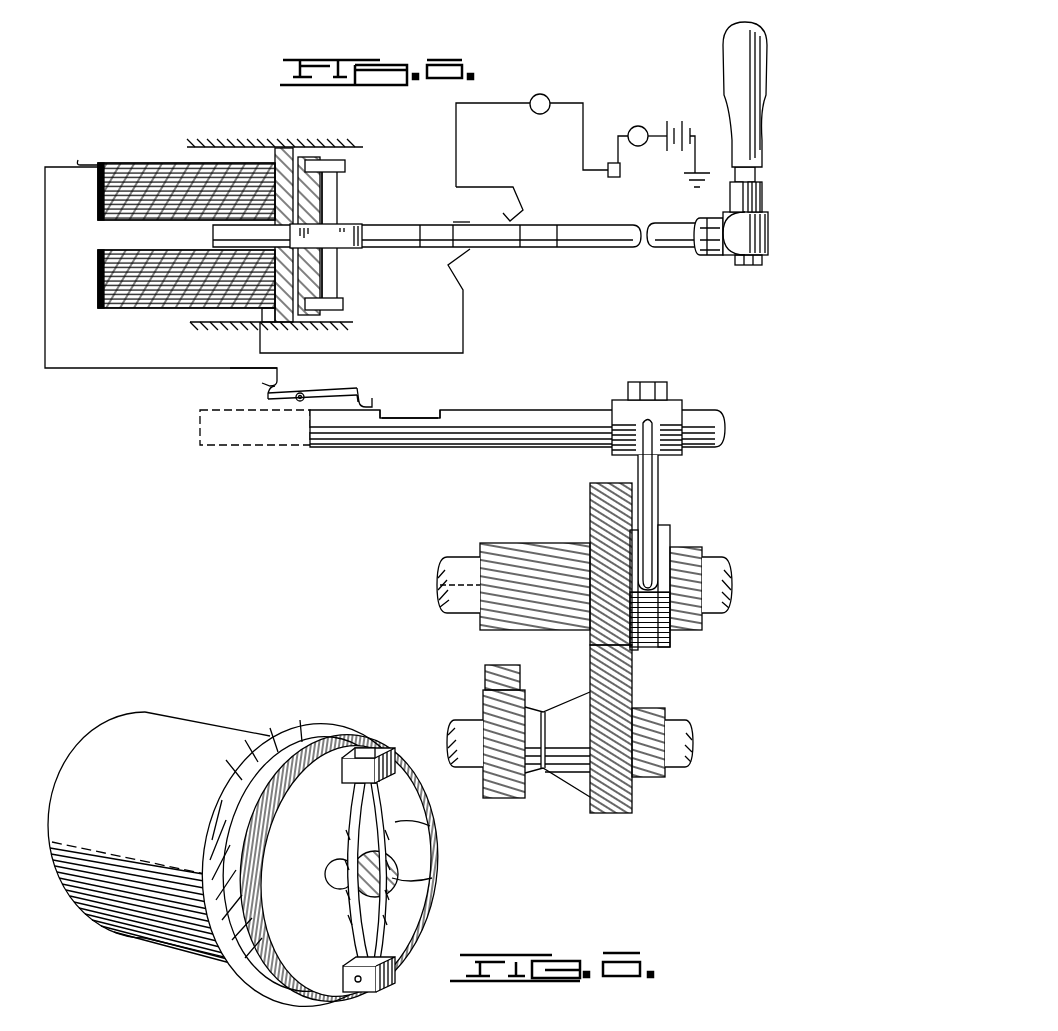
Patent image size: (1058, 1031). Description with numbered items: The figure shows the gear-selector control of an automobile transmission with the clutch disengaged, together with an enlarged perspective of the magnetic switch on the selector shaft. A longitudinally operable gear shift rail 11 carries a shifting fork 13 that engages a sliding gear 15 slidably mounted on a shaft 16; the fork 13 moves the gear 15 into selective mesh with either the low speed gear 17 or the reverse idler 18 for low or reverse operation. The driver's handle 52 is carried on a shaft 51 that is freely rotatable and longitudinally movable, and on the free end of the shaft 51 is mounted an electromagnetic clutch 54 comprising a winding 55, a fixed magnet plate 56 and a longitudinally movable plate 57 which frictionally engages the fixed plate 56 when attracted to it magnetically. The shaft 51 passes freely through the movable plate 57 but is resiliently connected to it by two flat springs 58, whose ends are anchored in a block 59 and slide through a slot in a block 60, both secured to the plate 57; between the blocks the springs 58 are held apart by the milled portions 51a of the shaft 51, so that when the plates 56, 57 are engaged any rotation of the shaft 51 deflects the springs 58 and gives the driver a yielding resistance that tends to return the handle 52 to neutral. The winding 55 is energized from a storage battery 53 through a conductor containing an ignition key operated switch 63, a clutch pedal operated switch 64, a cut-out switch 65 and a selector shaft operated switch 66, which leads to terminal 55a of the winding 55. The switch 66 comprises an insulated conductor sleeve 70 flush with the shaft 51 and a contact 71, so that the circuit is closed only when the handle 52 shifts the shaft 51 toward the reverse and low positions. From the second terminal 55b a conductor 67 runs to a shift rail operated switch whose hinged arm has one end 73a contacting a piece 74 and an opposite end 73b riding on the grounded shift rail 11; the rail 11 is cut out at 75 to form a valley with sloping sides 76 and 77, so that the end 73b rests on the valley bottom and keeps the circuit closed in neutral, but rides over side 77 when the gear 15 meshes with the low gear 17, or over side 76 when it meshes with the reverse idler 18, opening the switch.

In FIG. 5, the gear shift rail 11 is at (560, 410).
In FIG. 5, the shifting fork 13 is at (660, 495).
In FIG. 5, the sliding gear 15 is at (590, 505).
In FIG. 5, the shaft 16 is at (458, 560).
In FIG. 5, the low speed gear 17 is at (632, 803).
In FIG. 5, the reverse idler 18 is at (487, 675).
In FIG. 5, the shaft 51 is at (648, 225).
In FIG. 6, the shaft 51 is at (385, 870).
In FIG. 5, the milled portions 51a is at (355, 248).
In FIG. 6, the milled portions 51a is at (385, 890).
In FIG. 5, the handle 52 is at (730, 60).
In FIG. 5, the storage battery 53 is at (688, 125).
In FIG. 5, the electromagnetic clutch 54 is at (282, 150).
In FIG. 6, the electromagnetic clutch 54 is at (190, 720).
In FIG. 5, the winding 55 is at (160, 170).
In FIG. 5, the terminal 55a is at (262, 318).
In FIG. 5, the second terminal 55b is at (82, 164).
In FIG. 5, the fixed magnet plate 56 is at (308, 157).
In FIG. 6, the fixed magnet plate 56 is at (305, 735).
In FIG. 5, the longitudinally movable plate 57 is at (332, 162).
In FIG. 6, the longitudinally movable plate 57 is at (275, 775).
In FIG. 5, the flat springs 58 is at (338, 205).
In FIG. 6, the flat springs 58 is at (385, 830).
In FIG. 5, the block 59 is at (343, 305).
In FIG. 6, the block 59 is at (378, 992).
In FIG. 5, the block 60 is at (345, 166).
In FIG. 6, the block 60 is at (380, 756).
In FIG. 5, the ignition key operated switch 63 is at (645, 128).
In FIG. 5, the clutch pedal operated switch 64 is at (612, 178).
In FIG. 5, the cut-out switch 65 is at (550, 104).
In FIG. 5, the selector shaft operated switch 66 is at (485, 256).
In FIG. 5, the conductor 67 is at (47, 280).
In FIG. 5, the insulated conductor sleeve 70 is at (464, 222).
In FIG. 5, the contact 71 is at (518, 200).
In FIG. 5, the end of hinged arm 73a is at (300, 393).
In FIG. 5, the end of hinged arm 73b is at (366, 402).
In FIG. 5, the piece 74 is at (232, 375).
In FIG. 5, the cut-out 75 is at (412, 418).
In FIG. 5, the sloping side 76 is at (445, 410).
In FIG. 5, the sloping side 77 is at (382, 418).